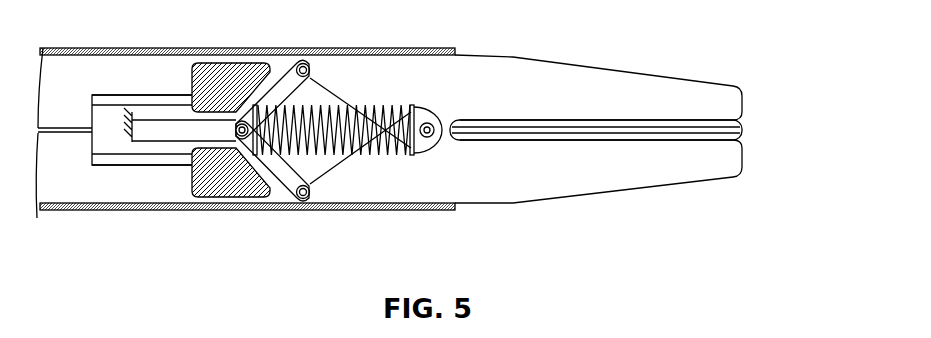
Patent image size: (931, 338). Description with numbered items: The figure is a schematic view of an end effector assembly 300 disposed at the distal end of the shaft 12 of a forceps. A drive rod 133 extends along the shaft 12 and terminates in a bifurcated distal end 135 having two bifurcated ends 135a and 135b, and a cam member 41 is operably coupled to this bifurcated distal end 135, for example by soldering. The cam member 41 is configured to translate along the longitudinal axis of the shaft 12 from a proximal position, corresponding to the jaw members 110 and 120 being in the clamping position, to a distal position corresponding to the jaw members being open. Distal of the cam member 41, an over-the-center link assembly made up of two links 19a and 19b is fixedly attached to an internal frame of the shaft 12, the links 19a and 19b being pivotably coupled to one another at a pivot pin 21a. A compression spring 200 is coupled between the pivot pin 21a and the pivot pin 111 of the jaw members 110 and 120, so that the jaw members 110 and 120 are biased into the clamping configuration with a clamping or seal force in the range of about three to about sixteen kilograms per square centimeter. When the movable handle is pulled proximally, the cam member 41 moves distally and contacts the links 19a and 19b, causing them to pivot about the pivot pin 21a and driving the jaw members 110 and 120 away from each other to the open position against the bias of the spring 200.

The shaft 12 is at (92, 48).
The cam member 41 is at (172, 74).
The link 19a is at (282, 182).
The link 19b is at (280, 88).
The pivot pin 21a is at (233, 131).
The compression spring 200 is at (370, 95).
The pivot pin 111 is at (431, 123).
The jaw member 120 is at (743, 105).
The jaw member 110 is at (743, 155).
The bifurcated distal end 135 is at (92, 115).
The bifurcated end 135a is at (173, 95).
The bifurcated end 135b is at (177, 165).
The drive rod 133 is at (72, 133).
The end effector assembly 300 is at (633, 110).